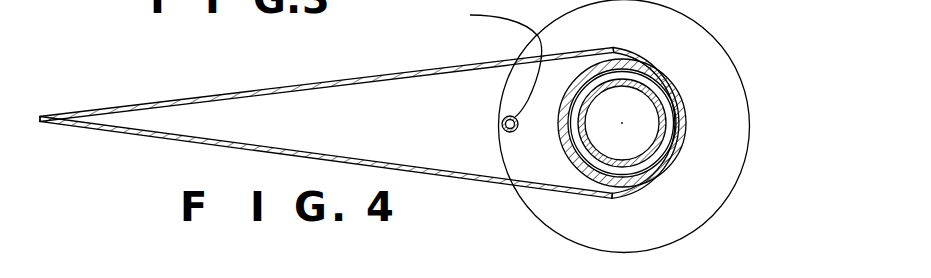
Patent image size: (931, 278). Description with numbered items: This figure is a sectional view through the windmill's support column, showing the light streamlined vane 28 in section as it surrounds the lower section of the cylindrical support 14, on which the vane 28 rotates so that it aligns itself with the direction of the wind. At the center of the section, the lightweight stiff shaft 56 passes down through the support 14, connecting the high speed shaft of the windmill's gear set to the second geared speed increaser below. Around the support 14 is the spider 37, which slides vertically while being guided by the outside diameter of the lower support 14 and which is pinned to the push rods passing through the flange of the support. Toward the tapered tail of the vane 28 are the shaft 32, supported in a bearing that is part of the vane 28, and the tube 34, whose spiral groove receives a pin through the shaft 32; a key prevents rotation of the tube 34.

The lower section of cylindrical support 14 is at (668, 81).
The vane 28 is at (281, 87).
The shaft 32 is at (502, 122).
The tube 34 is at (487, 60).
The spider 37 is at (502, 154).
The shaft 56 is at (667, 127).